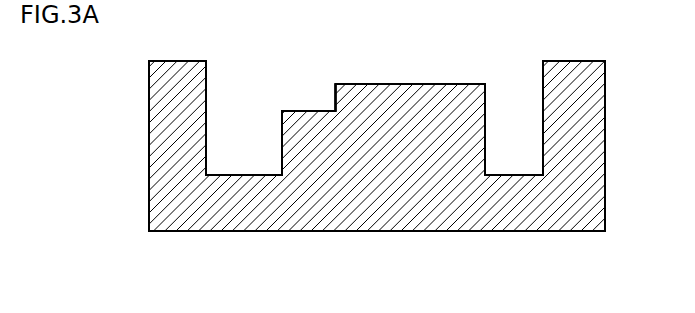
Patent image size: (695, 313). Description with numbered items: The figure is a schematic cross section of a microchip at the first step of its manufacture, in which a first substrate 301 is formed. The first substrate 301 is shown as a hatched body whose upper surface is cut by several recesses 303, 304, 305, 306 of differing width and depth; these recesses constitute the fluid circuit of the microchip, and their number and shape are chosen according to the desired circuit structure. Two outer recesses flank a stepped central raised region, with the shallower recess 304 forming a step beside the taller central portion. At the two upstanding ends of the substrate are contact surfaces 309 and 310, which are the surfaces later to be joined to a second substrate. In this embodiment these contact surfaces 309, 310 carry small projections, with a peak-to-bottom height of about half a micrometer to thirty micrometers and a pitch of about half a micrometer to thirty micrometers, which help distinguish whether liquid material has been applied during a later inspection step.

The first substrate 301 is at (580, 190).
The recess 303 is at (251, 164).
The recess 304 is at (309, 98).
The recess 305 is at (393, 68).
The recess 306 is at (503, 165).
The contact surface 309 is at (573, 61).
The contact surface 310 is at (173, 61).